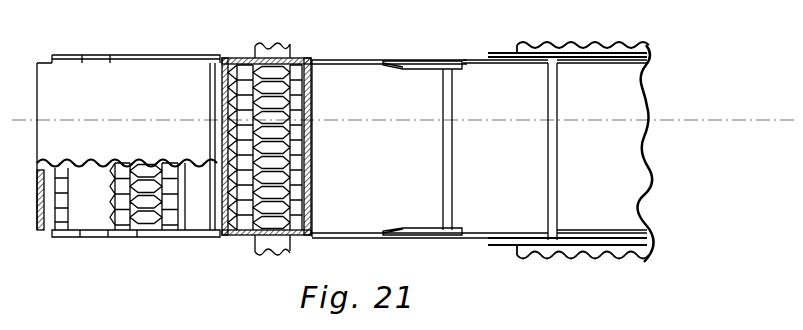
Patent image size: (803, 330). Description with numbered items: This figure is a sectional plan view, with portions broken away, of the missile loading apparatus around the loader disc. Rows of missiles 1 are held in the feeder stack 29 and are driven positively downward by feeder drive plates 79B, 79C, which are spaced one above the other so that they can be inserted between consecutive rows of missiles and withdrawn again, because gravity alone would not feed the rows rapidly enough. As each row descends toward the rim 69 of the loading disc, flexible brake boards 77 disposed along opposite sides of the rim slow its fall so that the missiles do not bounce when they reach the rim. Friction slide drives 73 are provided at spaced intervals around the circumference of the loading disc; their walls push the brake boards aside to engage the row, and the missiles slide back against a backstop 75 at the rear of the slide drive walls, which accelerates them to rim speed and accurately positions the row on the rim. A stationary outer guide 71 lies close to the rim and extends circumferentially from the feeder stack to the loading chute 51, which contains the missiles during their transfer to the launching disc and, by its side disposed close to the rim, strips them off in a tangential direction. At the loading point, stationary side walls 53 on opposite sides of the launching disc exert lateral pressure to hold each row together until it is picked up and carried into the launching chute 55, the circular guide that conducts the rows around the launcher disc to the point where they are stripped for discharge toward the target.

The missile 1 is at (62, 218).
The feeder stack 29 is at (311, 116).
The loading chute 51 is at (508, 150).
The stationary side walls 53 is at (600, 48).
The launching chute 55 is at (608, 150).
The rim of the loading disc 69 is at (384, 173).
The stationary outer guide 71 is at (133, 130).
The friction slide drives 73 is at (62, 57).
The backstop 75 is at (212, 238).
The flexible brake boards 77 is at (318, 62).
The feeder drive plate 79B is at (277, 50).
The feeder drive plate 79C is at (258, 252).